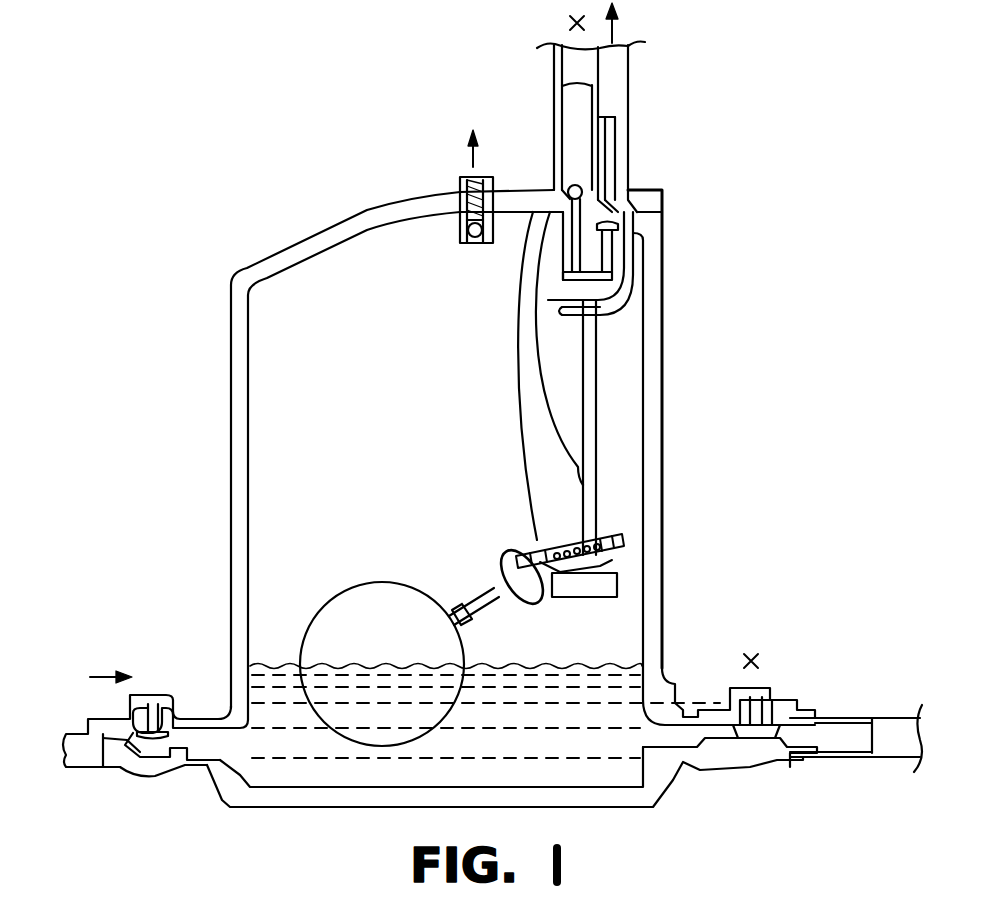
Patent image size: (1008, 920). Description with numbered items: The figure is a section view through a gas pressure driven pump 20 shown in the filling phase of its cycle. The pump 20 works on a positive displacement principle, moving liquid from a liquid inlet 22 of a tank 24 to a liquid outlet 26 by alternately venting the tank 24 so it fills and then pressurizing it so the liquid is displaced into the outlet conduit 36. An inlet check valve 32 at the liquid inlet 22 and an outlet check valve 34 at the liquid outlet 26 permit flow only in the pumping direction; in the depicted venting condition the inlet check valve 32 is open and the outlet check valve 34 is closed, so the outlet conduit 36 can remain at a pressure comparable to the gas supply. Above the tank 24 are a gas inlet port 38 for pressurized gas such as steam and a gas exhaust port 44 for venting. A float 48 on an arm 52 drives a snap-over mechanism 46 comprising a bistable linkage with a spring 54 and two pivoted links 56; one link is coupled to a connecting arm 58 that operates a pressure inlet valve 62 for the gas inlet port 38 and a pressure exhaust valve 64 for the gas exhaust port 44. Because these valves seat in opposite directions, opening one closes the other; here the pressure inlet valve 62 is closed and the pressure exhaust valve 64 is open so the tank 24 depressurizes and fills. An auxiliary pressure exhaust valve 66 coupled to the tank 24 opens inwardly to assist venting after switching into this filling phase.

The gas pressure driven pump 20 is at (672, 396).
The liquid inlet 22 is at (85, 757).
The tank 24 is at (263, 477).
The liquid outlet 26 is at (820, 738).
The inlet check valve 32 is at (173, 707).
The outlet check valve 34 is at (768, 700).
The outlet conduit 36 is at (898, 735).
The gas inlet port 38 is at (570, 115).
The gas exhaust port 44 is at (612, 137).
The snap-over mechanism 46 is at (555, 587).
The float 48 is at (340, 618).
The arm 52 is at (482, 595).
The spring 54 is at (553, 550).
The pivoted links 56 is at (577, 590).
The connecting arm 58 is at (588, 437).
The pressure inlet valve 62 is at (563, 190).
The pressure exhaust valve 64 is at (647, 190).
The auxiliary pressure exhaust valve 66 is at (458, 238).